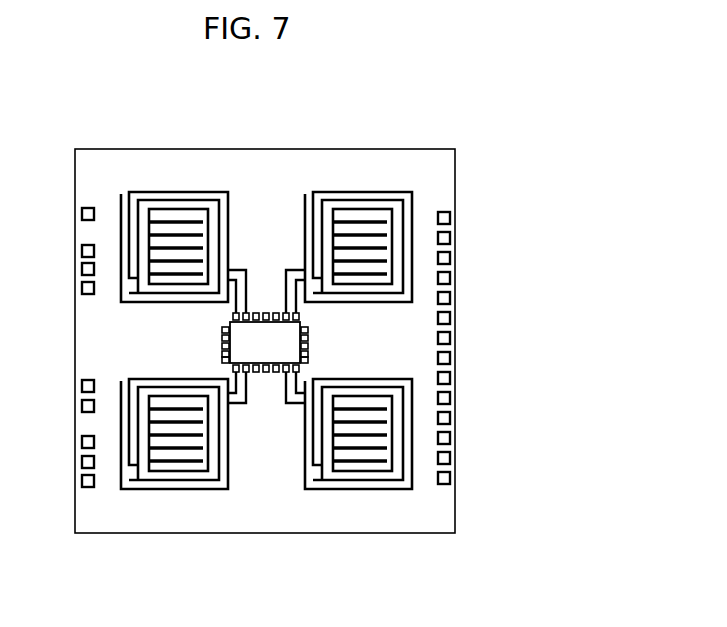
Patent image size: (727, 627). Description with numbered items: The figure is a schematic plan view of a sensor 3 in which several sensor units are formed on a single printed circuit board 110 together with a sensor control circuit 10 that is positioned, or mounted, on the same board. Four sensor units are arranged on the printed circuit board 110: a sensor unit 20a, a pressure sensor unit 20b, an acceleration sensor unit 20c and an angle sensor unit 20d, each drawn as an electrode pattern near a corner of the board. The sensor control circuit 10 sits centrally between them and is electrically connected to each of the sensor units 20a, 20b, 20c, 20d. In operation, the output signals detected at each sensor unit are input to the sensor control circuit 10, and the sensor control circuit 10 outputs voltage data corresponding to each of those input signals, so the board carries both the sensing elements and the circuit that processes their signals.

The sensor 3 is at (122, 123).
The printed circuit board 110 is at (446, 167).
The sensor control circuit 10 is at (290, 340).
The sensor unit 20a is at (183, 225).
The pressure sensor unit 20b is at (362, 222).
The acceleration sensor unit 20c is at (173, 468).
The angle sensor unit 20d is at (355, 468).